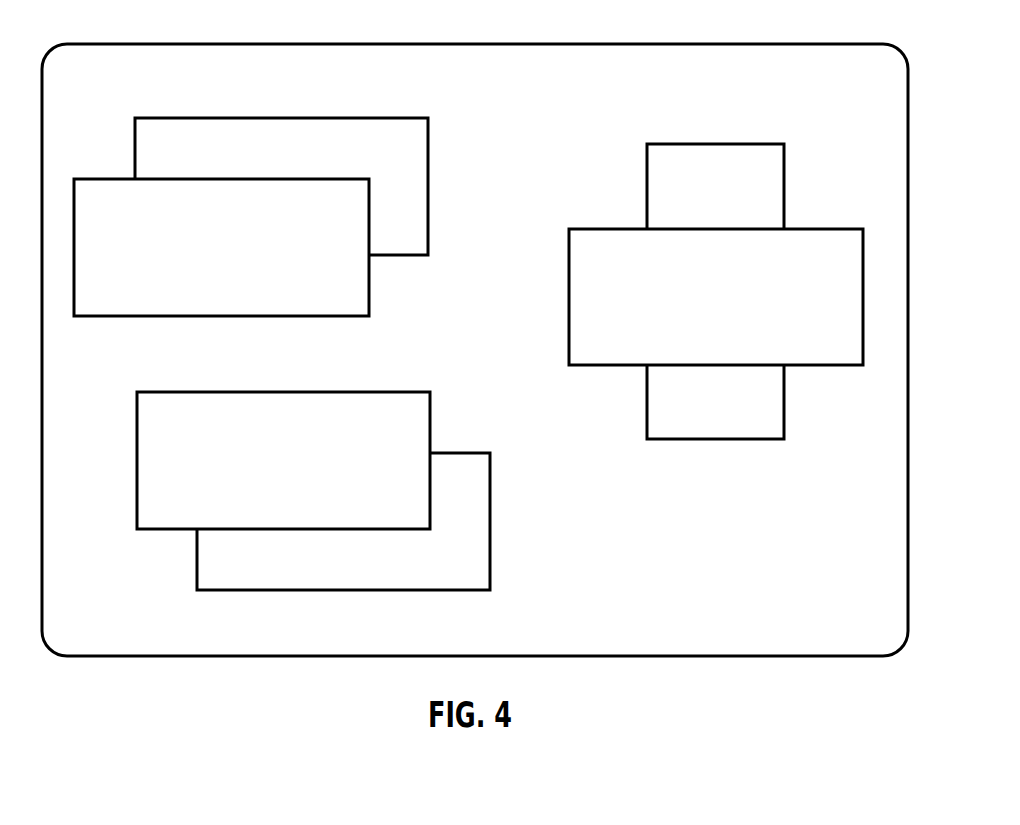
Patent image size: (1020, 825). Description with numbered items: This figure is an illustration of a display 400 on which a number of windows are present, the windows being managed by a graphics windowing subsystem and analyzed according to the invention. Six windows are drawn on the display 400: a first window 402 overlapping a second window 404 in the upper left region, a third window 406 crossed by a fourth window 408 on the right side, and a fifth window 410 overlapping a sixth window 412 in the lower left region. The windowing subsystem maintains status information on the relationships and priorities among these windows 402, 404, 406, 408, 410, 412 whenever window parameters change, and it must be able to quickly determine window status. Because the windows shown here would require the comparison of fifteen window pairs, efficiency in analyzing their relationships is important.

The display 400 is at (812, 567).
The window A 402 is at (350, 294).
The window B 404 is at (410, 233).
The window C 406 is at (767, 204).
The window D 408 is at (842, 344).
The window E 410 is at (472, 570).
The window F 412 is at (407, 508).